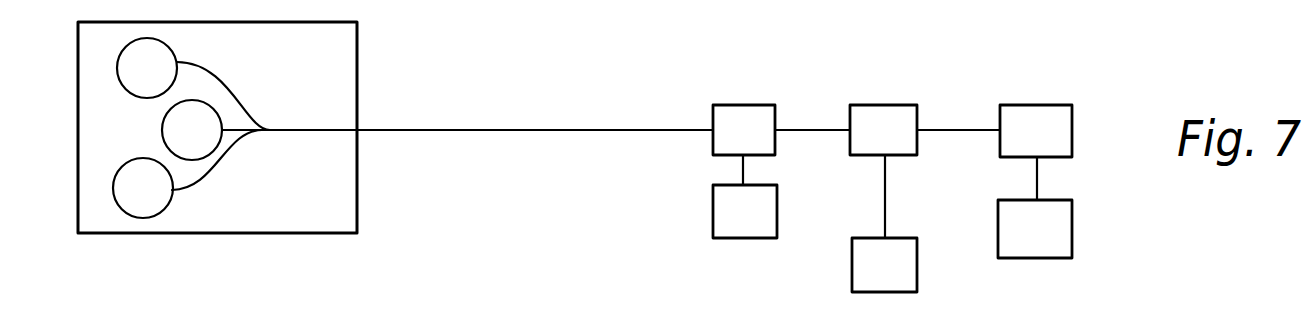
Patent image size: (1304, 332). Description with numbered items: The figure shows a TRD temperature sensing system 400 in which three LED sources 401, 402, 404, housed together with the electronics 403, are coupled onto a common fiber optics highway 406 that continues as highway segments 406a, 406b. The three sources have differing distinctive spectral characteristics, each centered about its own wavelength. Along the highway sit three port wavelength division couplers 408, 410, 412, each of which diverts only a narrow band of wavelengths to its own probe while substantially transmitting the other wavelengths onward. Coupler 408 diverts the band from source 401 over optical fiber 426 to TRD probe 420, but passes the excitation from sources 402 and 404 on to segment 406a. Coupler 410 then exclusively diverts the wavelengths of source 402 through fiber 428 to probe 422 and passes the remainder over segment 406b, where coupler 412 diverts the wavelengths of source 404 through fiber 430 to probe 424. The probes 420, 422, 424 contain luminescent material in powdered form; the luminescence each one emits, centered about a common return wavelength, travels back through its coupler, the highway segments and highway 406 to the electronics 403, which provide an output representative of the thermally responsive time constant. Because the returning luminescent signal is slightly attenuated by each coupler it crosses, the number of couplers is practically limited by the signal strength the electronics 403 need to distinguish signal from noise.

The system 400 is at (588, 67).
The LED source 401 is at (169, 47).
The LED source 402 is at (162, 130).
The electronics 403 is at (357, 182).
The LED source 404 is at (165, 208).
The fiber optics highway 406 is at (423, 130).
The fiber optics highway segment 406a is at (800, 131).
The fiber optics highway segment 406b is at (937, 131).
The wavelength division coupler 408 is at (719, 105).
The wavelength division coupler 410 is at (883, 105).
The wavelength division coupler 412 is at (1040, 105).
The TRD probe 420 is at (713, 220).
The TRD probe 422 is at (852, 283).
The TRD probe 424 is at (1072, 232).
The optical fiber 426 is at (741, 170).
The optical fiber 428 is at (885, 182).
The optical fiber 430 is at (1038, 173).